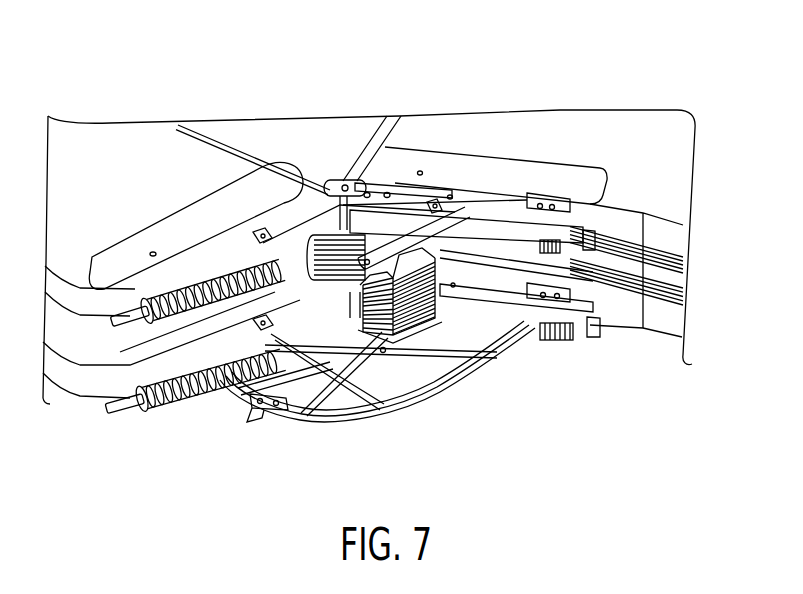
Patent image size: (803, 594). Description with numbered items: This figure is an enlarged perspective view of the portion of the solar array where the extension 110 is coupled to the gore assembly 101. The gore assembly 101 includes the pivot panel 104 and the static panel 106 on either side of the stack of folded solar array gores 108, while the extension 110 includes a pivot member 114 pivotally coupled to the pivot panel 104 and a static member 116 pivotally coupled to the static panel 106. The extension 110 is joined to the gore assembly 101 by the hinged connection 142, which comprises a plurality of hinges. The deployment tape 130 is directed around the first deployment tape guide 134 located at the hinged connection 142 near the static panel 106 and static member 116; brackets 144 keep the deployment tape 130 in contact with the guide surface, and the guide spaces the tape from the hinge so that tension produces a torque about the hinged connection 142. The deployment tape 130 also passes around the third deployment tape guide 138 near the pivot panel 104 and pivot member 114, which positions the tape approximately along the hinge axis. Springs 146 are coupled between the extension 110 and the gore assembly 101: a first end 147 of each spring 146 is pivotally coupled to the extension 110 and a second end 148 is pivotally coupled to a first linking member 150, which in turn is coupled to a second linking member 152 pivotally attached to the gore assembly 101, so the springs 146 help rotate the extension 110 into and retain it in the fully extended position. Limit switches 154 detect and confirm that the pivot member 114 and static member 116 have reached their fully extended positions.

The gore assembly 101 is at (561, 78).
The pivot panel 104 is at (680, 168).
The static panel 106 is at (675, 325).
The solar array gores 108 is at (697, 284).
The extension 110 is at (90, 98).
The pivot member 114 is at (166, 137).
The static member 116 is at (88, 394).
The deployment tape 130 is at (260, 145).
The first deployment tape guide 134 is at (440, 398).
The third deployment tape guide 138 is at (340, 178).
The hinged connection 142 is at (362, 358).
The bracket 144 is at (253, 420).
The spring 146 is at (208, 395).
The first end of spring 147 is at (136, 436).
The second end of spring 148 is at (284, 382).
The first linking member 150 is at (342, 343).
The second linking member 152 is at (437, 362).
The limit switch 154 is at (557, 381).